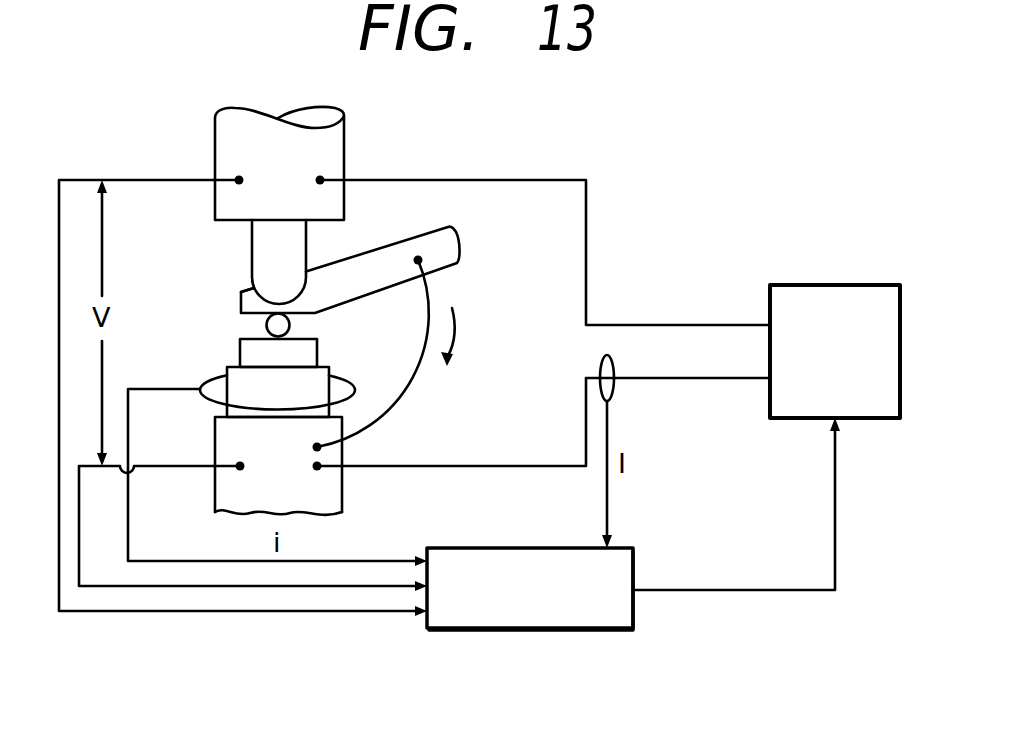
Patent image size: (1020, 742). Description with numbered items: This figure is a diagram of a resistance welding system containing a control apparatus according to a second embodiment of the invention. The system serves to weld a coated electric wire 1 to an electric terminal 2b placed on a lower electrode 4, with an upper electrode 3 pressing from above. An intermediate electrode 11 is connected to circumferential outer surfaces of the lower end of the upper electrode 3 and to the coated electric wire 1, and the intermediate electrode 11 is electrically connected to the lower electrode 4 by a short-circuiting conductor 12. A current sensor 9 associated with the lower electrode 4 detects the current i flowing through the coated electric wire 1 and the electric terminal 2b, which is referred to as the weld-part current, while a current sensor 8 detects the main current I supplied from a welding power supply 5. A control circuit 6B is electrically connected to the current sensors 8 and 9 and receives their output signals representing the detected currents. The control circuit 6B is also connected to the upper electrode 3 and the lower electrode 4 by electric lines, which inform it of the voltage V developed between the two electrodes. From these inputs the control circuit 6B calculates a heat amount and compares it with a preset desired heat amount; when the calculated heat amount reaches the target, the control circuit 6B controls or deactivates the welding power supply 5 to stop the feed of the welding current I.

The coated electric wire 1 is at (267, 325).
The electric terminal 2b is at (252, 353).
The upper electrode 3 is at (267, 250).
The lower electrode 4 is at (331, 374).
The welding power supply 5 is at (855, 285).
The control circuit 6B is at (618, 550).
The current sensor 8 is at (613, 362).
The current sensor 9 is at (210, 400).
The intermediate electrode 11 is at (375, 259).
The short-circuiting conductor 12 is at (423, 388).